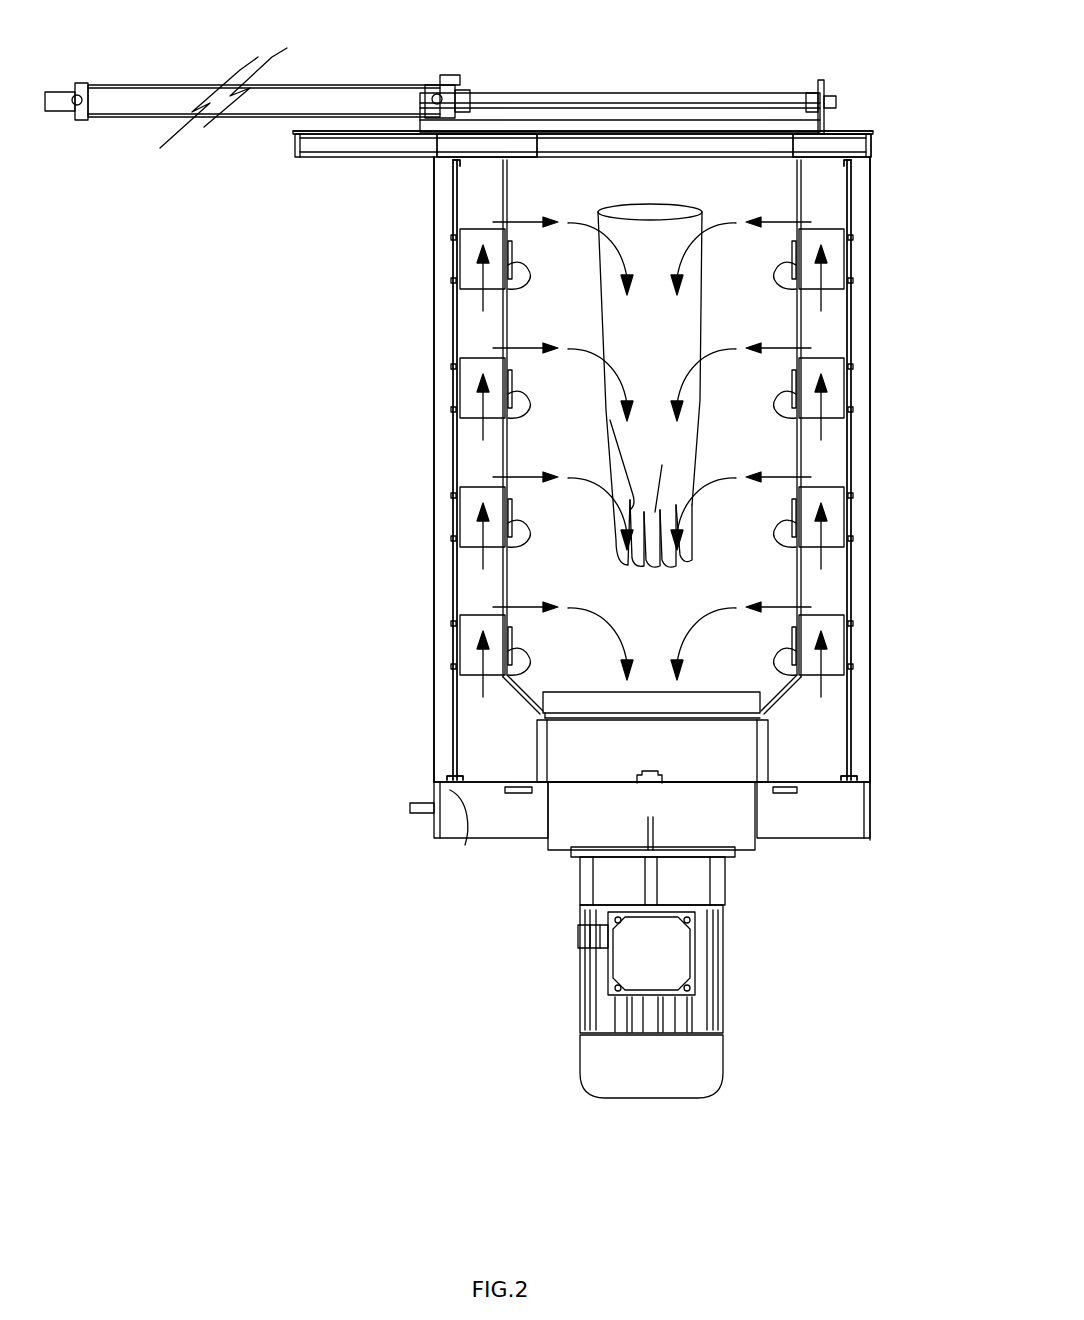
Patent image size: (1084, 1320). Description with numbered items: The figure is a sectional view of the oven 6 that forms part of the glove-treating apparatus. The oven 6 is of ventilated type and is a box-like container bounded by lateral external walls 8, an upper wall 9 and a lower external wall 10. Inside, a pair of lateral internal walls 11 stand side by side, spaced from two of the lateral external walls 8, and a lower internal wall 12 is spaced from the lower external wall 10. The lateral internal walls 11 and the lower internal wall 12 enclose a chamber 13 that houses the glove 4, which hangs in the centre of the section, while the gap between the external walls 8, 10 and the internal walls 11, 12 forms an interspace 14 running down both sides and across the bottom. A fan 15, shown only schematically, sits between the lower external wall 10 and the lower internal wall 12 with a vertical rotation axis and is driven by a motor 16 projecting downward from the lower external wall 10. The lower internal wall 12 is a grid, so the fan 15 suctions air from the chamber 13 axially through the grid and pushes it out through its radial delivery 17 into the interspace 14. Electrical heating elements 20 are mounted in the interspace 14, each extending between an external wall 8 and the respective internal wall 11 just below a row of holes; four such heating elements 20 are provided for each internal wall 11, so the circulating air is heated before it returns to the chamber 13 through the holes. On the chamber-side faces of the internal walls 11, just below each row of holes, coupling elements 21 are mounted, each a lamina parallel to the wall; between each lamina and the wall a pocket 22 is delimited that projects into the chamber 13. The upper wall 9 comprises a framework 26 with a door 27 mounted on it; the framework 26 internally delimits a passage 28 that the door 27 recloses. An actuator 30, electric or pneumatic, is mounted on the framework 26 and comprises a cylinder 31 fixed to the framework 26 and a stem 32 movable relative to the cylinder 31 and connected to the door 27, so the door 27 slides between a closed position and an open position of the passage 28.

The glove 4 is at (676, 178).
The oven 6 is at (897, 855).
The lateral external walls 8 is at (455, 192).
The upper wall 9 is at (854, 110).
The lower external wall 10 is at (827, 786).
The lateral internal walls 11 is at (503, 212).
The lower internal wall 12 is at (717, 697).
The chamber 13 is at (770, 185).
The interspace 14 is at (473, 600).
The fan 15 is at (598, 757).
The motor 16 is at (722, 995).
The radial delivery 17 is at (747, 772).
The electrical heating elements 20 is at (473, 278).
The coupling elements 21 is at (508, 289).
The pocket 22 is at (508, 272).
The framework 26 is at (866, 133).
The door 27 is at (596, 132).
The passage 28 is at (566, 143).
The actuator 30 is at (352, 68).
The cylinder 31 is at (140, 90).
The stem 32 is at (730, 93).